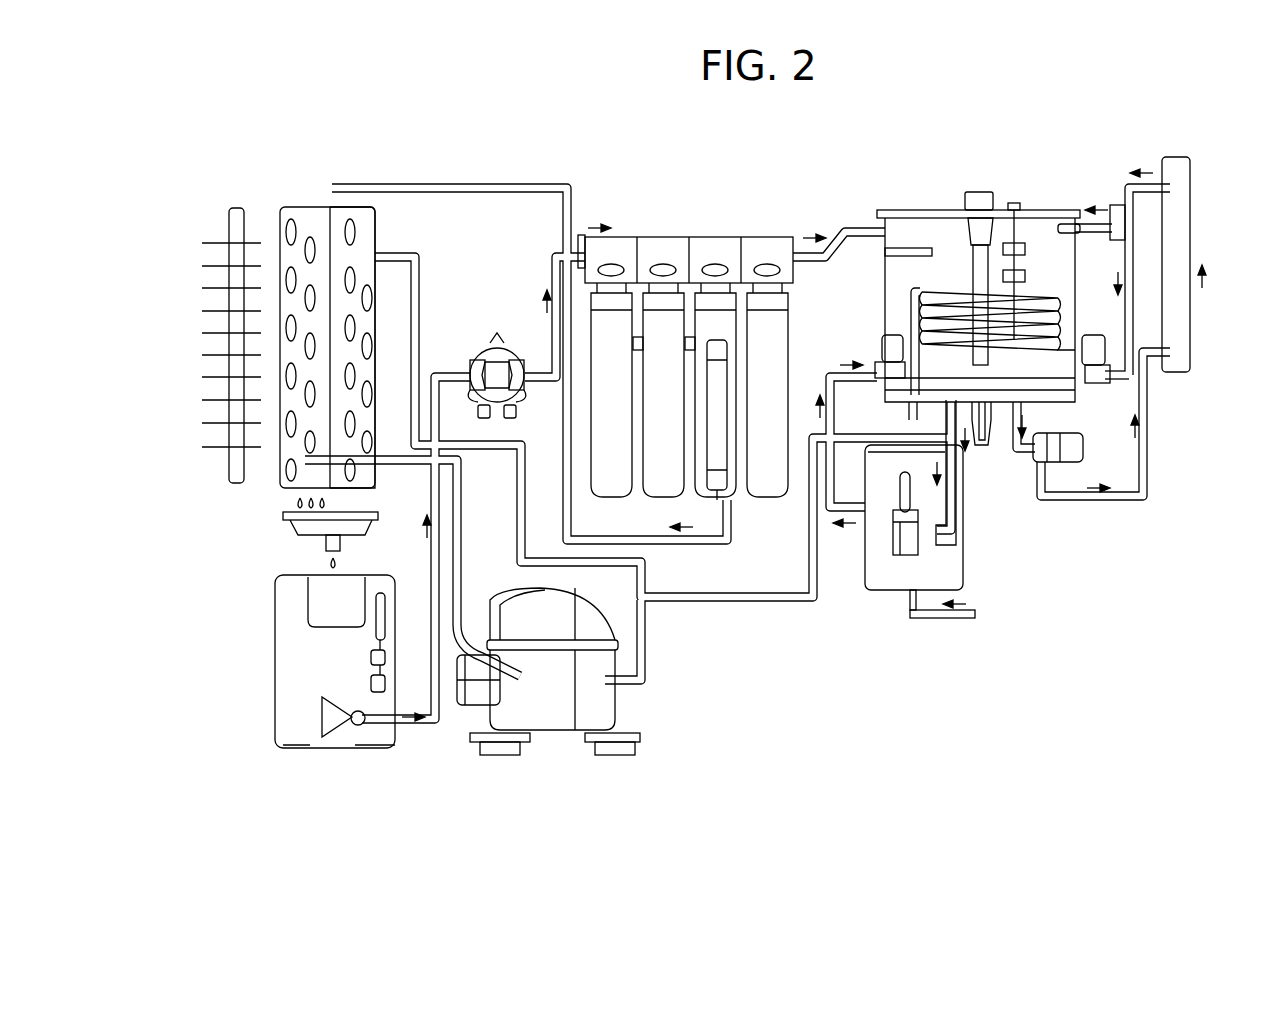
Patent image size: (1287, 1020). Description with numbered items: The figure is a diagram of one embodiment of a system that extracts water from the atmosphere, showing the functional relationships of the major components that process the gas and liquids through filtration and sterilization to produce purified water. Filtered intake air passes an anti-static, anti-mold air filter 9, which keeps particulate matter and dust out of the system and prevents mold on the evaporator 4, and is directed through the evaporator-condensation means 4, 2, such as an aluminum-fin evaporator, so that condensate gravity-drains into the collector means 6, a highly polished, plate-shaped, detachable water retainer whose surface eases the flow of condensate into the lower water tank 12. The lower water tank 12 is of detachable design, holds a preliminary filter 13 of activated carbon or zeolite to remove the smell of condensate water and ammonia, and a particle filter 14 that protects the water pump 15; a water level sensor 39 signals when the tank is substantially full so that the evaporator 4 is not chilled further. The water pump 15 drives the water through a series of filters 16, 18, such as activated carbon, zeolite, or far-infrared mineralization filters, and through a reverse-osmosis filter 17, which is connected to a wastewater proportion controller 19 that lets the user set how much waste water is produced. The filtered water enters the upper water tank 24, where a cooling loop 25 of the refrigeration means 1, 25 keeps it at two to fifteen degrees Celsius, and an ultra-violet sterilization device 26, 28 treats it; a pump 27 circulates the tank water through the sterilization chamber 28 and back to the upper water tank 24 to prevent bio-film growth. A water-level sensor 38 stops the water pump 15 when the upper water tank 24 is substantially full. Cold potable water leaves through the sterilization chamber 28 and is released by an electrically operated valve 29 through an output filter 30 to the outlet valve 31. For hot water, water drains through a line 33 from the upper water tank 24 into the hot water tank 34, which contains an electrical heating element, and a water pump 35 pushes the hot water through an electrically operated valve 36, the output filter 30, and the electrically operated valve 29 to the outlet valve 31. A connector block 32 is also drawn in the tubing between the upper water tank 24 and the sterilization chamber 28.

The refrigeration means 1 is at (618, 737).
The evaporator-condensation means 2 is at (350, 207).
The evaporator 4 is at (308, 207).
The collector means 6 is at (322, 523).
The air filter 9 is at (235, 232).
The lower water tank 12 is at (278, 682).
The preliminary filter 13 is at (353, 590).
The particle filter 14 is at (350, 723).
The water pump 15 is at (495, 345).
The filter 16 is at (600, 295).
The reverse-osmosis filter 17 is at (725, 295).
The filter 18 is at (777, 295).
The wastewater proportion controller 19 is at (723, 340).
The upper water tank 24 is at (910, 235).
The cooling loop 25 is at (1035, 285).
The ultra-violet sterilization device 26 is at (975, 265).
The pump 27 is at (1055, 455).
The sterilization chamber 28 is at (1175, 165).
The electrically operated valve 29 is at (1100, 365).
The output filter 30 is at (980, 440).
The outlet valve 31 is at (1000, 435).
The connector block 32 is at (1112, 235).
The line 33 is at (953, 522).
The hot water tank 34 is at (945, 575).
The water pump 35 is at (893, 520).
The electrically operated valve 36 is at (883, 337).
The water-level sensor 38 is at (1015, 225).
The water level sensor 39 is at (378, 648).